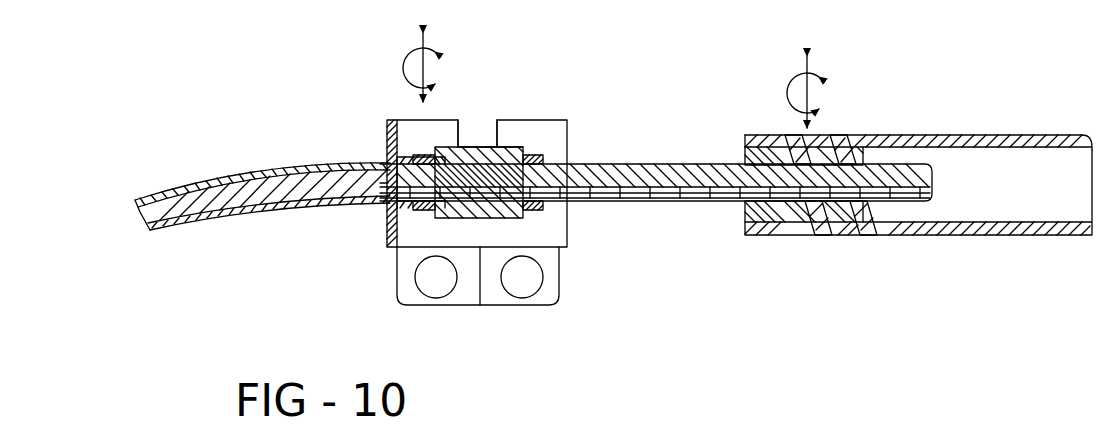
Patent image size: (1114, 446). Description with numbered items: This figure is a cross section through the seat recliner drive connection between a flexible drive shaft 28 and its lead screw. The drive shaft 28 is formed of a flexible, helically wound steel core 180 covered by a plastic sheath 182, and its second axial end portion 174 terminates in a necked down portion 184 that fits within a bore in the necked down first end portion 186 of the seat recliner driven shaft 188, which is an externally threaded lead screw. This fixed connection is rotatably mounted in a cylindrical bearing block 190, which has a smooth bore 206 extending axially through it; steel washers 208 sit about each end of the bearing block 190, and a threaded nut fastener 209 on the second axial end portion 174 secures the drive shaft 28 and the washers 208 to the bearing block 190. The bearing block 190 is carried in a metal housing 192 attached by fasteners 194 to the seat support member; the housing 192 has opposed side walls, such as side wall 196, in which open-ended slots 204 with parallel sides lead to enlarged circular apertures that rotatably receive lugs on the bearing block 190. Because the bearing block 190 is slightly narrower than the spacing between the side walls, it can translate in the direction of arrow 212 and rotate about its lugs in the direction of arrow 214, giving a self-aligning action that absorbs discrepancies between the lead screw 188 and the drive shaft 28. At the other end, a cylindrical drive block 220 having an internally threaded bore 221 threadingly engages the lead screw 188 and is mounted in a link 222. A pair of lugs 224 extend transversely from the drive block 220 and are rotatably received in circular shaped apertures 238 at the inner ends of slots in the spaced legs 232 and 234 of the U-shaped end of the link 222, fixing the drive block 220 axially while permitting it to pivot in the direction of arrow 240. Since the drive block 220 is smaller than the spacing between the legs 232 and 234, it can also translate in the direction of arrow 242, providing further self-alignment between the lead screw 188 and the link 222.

The drive shaft 28 is at (188, 197).
The second axial end portion 174 is at (380, 183).
The helically wound steel core 180 is at (200, 217).
The plastic sheath 182 is at (216, 176).
The necked down portion 184 is at (393, 158).
The necked down first end portion 186 is at (548, 130).
The seat recliner driven shaft 188 is at (636, 164).
The bearing block 190 is at (478, 147).
The housing 192 is at (500, 305).
The fasteners 194 is at (432, 296).
The side wall 196 is at (480, 242).
The open-ended slots 204 is at (465, 120).
The smooth bore 206 is at (510, 147).
The steel washers 208 is at (415, 225).
The fastener 209 is at (390, 207).
The arrow 212 is at (418, 46).
The arrow 214 is at (403, 68).
The drive block 220 is at (920, 143).
The internally threaded bore 221 is at (742, 190).
The link 222 is at (1000, 143).
The lugs 224 is at (820, 134).
The leg 232 is at (848, 237).
The leg 234 is at (753, 137).
The circular shaped aperture 238 is at (806, 236).
The arrow 240 is at (788, 88).
The arrow 242 is at (826, 93).